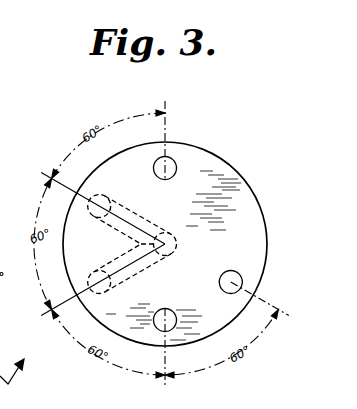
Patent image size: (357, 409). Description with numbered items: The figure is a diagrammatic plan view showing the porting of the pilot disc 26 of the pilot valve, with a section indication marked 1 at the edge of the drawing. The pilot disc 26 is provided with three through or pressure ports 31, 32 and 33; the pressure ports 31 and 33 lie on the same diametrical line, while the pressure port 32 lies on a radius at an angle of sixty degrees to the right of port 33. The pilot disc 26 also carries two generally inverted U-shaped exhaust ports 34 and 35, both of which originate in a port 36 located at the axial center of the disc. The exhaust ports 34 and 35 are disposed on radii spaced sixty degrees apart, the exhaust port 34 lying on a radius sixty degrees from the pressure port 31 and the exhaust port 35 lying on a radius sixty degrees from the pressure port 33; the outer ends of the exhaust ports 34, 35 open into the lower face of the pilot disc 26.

The pilot disc 26 is at (252, 192).
The pressure port 31 is at (172, 162).
The pressure port 32 is at (232, 282).
The pressure port 33 is at (178, 316).
The exhaust port 34 is at (136, 212).
The exhaust port 35 is at (140, 273).
The port 36 is at (177, 238).
The section line 1 is at (18, 371).